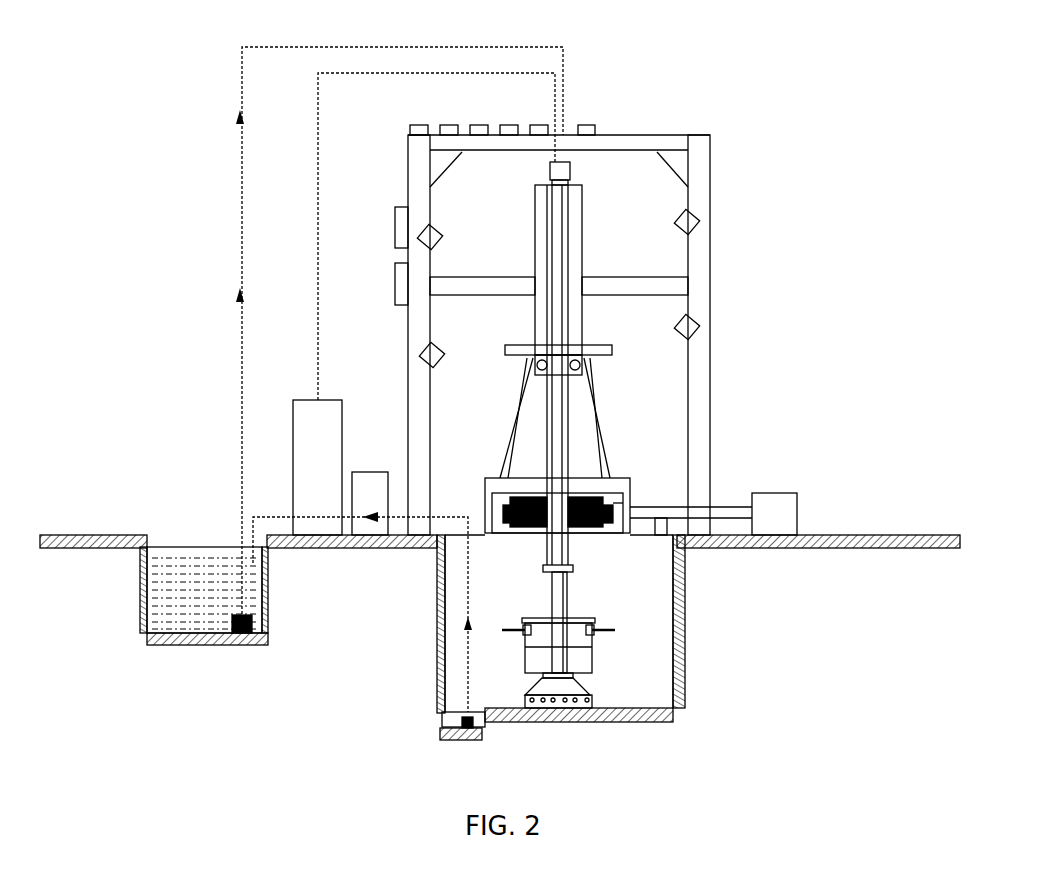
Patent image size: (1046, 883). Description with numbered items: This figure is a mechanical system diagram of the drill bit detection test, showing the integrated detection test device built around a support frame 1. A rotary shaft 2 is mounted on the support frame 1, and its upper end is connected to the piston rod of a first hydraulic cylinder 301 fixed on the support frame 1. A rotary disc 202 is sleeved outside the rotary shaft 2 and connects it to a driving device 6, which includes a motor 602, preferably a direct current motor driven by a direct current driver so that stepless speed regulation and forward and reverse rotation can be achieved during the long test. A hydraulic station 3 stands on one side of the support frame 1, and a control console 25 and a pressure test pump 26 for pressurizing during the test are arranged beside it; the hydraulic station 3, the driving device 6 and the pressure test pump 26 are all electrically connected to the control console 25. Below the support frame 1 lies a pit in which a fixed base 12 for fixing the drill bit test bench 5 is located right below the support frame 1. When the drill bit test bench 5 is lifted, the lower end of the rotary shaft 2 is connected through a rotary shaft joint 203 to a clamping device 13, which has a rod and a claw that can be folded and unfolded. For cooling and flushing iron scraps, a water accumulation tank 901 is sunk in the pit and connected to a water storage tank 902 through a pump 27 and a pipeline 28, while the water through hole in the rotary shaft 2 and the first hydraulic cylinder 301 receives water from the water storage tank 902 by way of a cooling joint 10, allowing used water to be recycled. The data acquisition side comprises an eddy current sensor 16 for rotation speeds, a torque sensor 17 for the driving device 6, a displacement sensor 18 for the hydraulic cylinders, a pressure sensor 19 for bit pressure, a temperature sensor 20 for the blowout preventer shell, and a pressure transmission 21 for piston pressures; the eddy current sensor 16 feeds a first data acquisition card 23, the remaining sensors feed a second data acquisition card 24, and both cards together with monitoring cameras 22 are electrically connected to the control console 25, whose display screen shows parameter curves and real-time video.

The support frame 1 is at (700, 202).
The rotary shaft 2 is at (562, 473).
The hydraulic station 3 is at (327, 460).
The drill bit test bench 5 is at (583, 668).
The driving device 6 is at (730, 500).
The cooling joint 10 is at (570, 167).
The fixed base 12 is at (570, 703).
The clamping device 13 is at (565, 585).
The eddy current sensor 16 is at (417, 125).
The torque sensor 17 is at (447, 125).
The displacement sensor 18 is at (478, 125).
The pressure sensor 19 is at (510, 125).
The temperature sensor 20 is at (542, 125).
The pressure transmission 21 is at (590, 125).
The monitoring camera 22 is at (697, 222).
The first data acquisition card 23 is at (400, 222).
The second data acquisition card 24 is at (398, 287).
The control console 25 is at (368, 505).
The pressure test pump 26 is at (233, 633).
The pump 27 is at (465, 733).
The pipeline 28 is at (467, 588).
The rotary disc 202 is at (613, 503).
The rotary shaft joint 203 is at (543, 568).
The first hydraulic cylinder 301 is at (572, 262).
The motor 602 is at (783, 517).
The water accumulation tank 901 is at (447, 722).
The water storage tank 902 is at (147, 607).